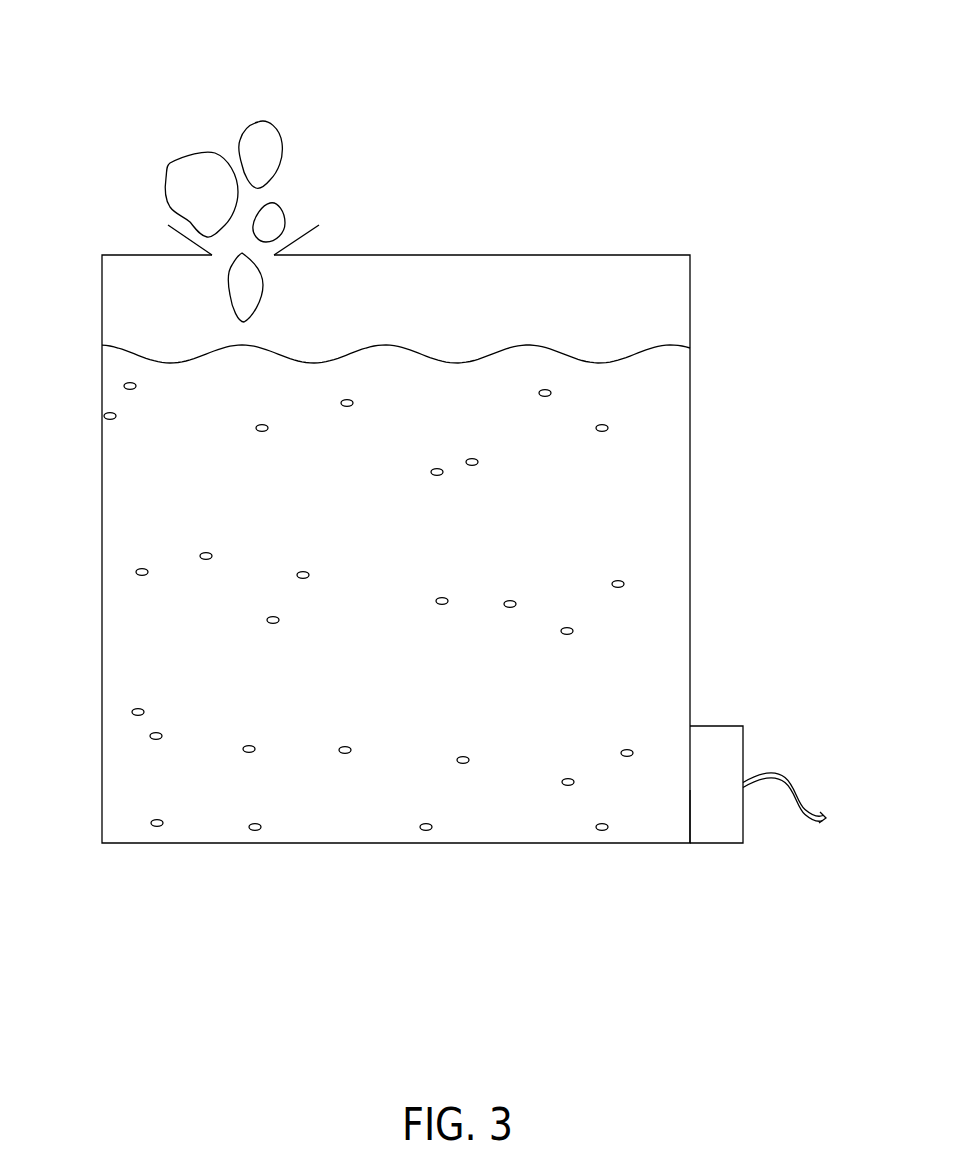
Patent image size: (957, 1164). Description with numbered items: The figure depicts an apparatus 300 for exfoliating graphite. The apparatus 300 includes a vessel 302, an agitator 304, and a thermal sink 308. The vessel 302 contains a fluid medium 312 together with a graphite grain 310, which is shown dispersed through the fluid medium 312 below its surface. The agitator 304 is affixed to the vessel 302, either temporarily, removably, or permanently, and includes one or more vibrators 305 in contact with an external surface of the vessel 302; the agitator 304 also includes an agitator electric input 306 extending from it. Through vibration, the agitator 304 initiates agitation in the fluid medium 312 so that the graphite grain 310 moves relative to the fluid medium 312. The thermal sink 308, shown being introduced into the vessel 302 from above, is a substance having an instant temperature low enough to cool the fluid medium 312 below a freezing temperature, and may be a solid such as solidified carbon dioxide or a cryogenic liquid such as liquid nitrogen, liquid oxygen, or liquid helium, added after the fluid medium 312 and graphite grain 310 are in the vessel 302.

The apparatus 300 is at (236, 50).
The vessel 302 is at (97, 668).
The agitator 304 is at (727, 716).
The vibrators 305 is at (680, 841).
The agitator electric input 306 is at (797, 783).
The thermal sink 308 is at (284, 132).
The graphite grain 310 is at (133, 572).
The fluid medium 312 is at (558, 345).